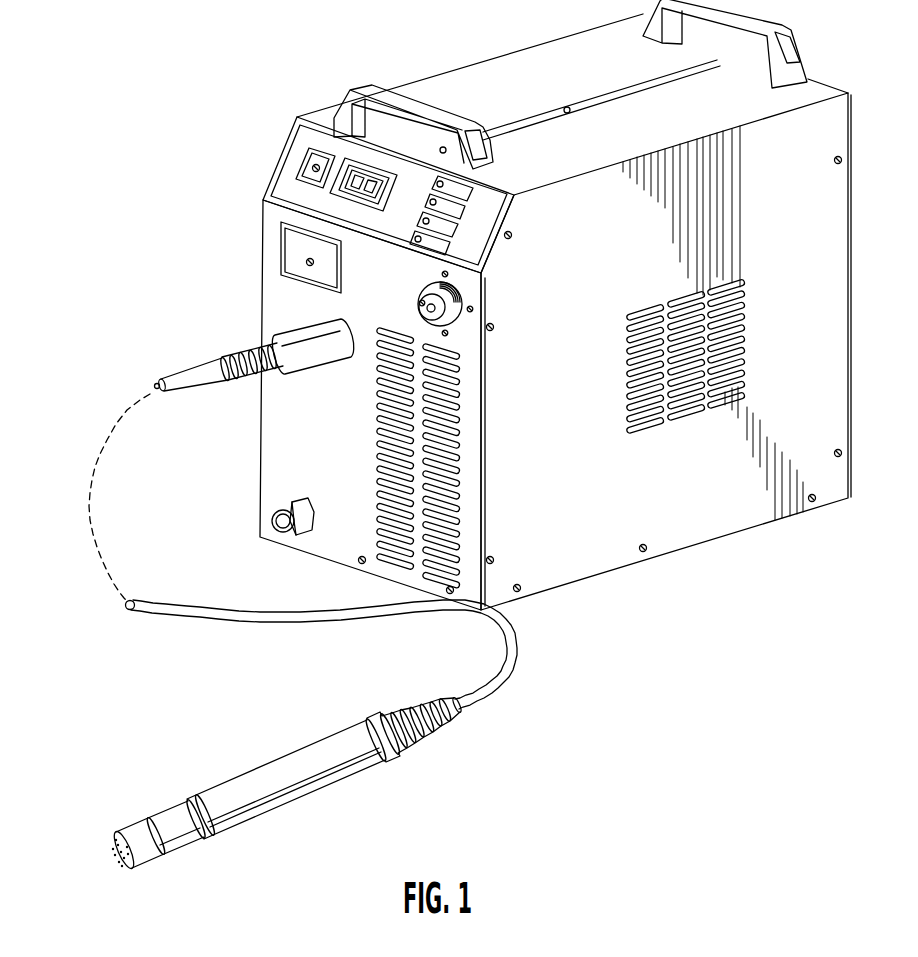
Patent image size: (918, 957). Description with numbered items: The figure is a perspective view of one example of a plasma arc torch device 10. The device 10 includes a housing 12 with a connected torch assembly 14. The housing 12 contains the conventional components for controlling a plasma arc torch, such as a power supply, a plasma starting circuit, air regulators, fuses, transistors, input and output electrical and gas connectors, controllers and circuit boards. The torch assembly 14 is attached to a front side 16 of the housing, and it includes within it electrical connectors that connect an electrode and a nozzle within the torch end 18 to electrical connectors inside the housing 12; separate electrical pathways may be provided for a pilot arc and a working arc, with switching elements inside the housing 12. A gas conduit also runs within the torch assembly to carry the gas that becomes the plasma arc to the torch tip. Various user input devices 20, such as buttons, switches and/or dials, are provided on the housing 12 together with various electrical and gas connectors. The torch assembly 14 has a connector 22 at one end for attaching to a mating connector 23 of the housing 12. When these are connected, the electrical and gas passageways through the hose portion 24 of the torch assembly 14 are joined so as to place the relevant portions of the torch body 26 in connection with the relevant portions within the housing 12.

The plasma arc torch device 10 is at (503, 305).
The housing 12 is at (523, 70).
The torch assembly 14 is at (125, 377).
The front side 16 is at (470, 360).
The torch end 18 is at (287, 784).
The user input devices 20 is at (252, 161).
The connector 22 is at (327, 366).
The mating connector 23 is at (456, 294).
The hose portion 24 is at (270, 623).
The torch body 26 is at (270, 808).